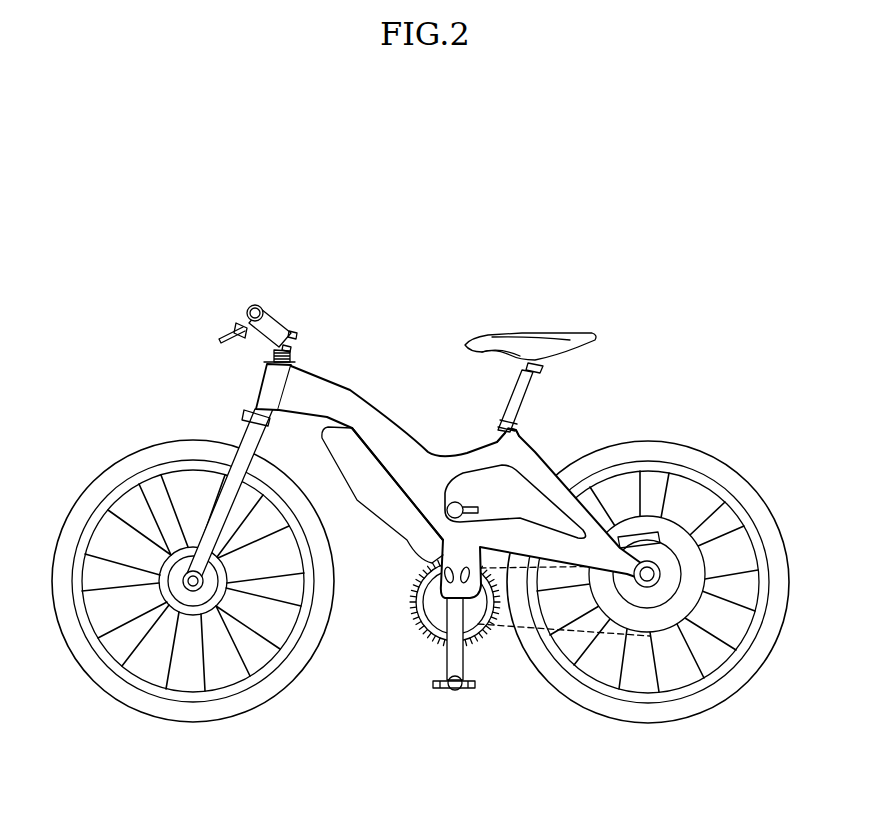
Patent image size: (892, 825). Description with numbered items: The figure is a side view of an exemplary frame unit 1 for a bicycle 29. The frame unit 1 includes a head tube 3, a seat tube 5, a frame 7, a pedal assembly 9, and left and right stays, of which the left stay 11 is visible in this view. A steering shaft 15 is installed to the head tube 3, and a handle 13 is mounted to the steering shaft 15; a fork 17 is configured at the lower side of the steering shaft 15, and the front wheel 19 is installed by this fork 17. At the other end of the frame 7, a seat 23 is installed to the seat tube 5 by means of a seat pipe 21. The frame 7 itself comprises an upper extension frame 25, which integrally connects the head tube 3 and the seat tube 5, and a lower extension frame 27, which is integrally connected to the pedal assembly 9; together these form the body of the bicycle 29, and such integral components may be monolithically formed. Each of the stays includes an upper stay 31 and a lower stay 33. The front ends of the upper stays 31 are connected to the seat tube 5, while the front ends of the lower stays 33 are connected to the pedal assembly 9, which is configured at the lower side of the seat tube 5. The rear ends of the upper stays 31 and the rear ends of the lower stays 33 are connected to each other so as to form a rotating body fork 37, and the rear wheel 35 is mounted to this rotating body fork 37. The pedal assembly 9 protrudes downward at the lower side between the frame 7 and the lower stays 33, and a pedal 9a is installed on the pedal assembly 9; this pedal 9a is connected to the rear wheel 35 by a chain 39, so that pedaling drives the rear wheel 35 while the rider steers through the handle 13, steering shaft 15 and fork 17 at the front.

The frame unit 1 is at (412, 376).
The head tube 3 is at (258, 392).
The seat tube 5 is at (498, 433).
The frame 7 is at (348, 397).
The pedal assembly 9 is at (428, 603).
The pedal 9a is at (436, 688).
The left stay 11 is at (548, 462).
The handle 13 is at (277, 337).
The steering shaft 15 is at (272, 360).
The fork 17 is at (215, 513).
The front wheel 19 is at (147, 706).
The seat pipe 21 is at (505, 413).
The seat 23 is at (547, 340).
The upper extension frame 25 is at (462, 465).
The lower extension frame 27 is at (437, 513).
The bicycle 29 is at (682, 382).
The upper stay 31 is at (528, 462).
The lower stay 33 is at (562, 572).
The rear wheel 35 is at (712, 690).
The rotating body fork 37 is at (652, 570).
The chain 39 is at (612, 637).